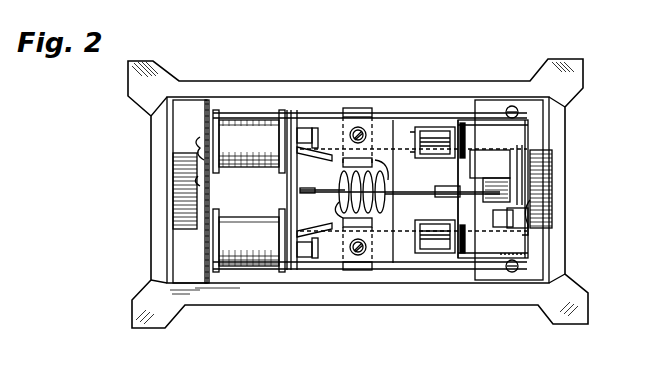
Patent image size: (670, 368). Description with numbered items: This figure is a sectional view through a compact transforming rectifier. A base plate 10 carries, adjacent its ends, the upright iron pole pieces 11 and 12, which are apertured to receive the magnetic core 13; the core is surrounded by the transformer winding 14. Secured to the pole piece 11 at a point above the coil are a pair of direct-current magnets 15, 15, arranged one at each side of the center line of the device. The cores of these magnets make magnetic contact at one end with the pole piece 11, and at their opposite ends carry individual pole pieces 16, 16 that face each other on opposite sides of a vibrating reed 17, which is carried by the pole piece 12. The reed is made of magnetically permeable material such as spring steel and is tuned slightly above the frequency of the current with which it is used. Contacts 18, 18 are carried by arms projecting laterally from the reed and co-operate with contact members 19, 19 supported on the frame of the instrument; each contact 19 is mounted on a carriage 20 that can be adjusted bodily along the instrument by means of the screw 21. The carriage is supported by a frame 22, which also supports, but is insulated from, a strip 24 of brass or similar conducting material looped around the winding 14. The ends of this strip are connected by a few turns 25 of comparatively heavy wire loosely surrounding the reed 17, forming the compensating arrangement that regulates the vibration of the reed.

The base plate 10 is at (362, 298).
The pole piece 11 is at (205, 118).
The pole piece 12 is at (518, 150).
The magnetic core 13 is at (180, 194).
The transformer winding 14 is at (312, 111).
The direct-current magnets 15 is at (249, 191).
The pole pieces 16 is at (318, 214).
The vibrating reed 17 is at (408, 190).
The contacts 18 is at (466, 133).
The contact members 19 is at (460, 123).
The carriage 20 is at (487, 190).
The screw 21 is at (540, 233).
The frame 22 is at (393, 120).
The strip 24 is at (358, 108).
The turns 25 is at (386, 204).